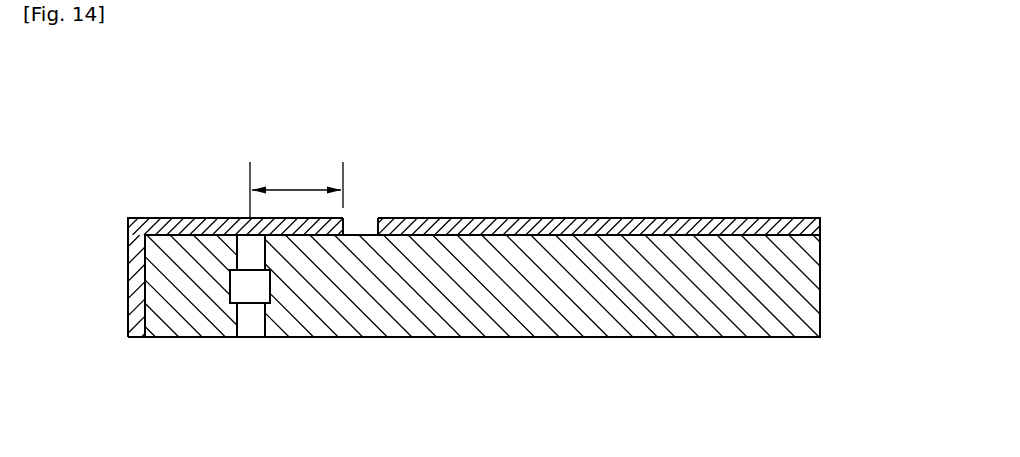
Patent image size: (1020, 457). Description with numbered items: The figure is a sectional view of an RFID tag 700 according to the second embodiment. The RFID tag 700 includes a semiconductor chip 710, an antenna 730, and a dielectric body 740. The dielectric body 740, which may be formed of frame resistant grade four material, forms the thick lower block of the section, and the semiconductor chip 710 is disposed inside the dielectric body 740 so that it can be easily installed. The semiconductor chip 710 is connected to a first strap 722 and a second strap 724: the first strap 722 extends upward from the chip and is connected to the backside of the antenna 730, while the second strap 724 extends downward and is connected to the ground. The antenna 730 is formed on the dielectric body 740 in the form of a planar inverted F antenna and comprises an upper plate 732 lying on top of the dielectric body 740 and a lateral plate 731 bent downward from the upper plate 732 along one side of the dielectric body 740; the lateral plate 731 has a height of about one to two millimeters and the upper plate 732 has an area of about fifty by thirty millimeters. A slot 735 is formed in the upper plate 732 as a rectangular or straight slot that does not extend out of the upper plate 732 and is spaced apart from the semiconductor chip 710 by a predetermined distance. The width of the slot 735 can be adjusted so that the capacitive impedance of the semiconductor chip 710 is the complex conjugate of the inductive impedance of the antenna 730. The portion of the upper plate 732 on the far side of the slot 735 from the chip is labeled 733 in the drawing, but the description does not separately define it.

The RFID tag 700 is at (167, 110).
The semiconductor chip 710 is at (237, 285).
The first strap 722 is at (245, 248).
The second strap 724 is at (253, 328).
The antenna 730 is at (543, 218).
The lateral plate 731 is at (127, 273).
The upper plate 732 is at (157, 227).
The second portion of cover layer 733 is at (702, 230).
The slot 735 is at (359, 226).
The dielectric body 740 is at (812, 292).